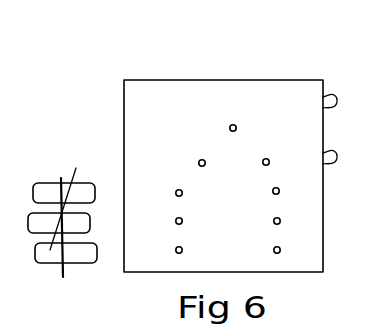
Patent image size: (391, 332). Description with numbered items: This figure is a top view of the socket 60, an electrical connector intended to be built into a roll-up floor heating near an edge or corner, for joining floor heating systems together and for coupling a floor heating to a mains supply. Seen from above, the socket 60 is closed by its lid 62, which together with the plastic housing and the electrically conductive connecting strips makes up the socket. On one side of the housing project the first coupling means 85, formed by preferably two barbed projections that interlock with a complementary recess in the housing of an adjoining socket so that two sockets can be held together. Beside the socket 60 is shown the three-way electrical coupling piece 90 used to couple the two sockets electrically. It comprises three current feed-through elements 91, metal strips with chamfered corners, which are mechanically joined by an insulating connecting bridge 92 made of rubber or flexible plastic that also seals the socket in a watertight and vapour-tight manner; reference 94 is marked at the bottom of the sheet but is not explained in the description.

The socket 60 is at (246, 75).
The lid 62 is at (184, 143).
The first coupling means 85 is at (356, 97).
The electrical coupling piece 90 is at (40, 169).
The current feed-through elements 91 is at (48, 183).
The connecting bridge 92 is at (63, 277).
The connector 94 is at (72, 327).